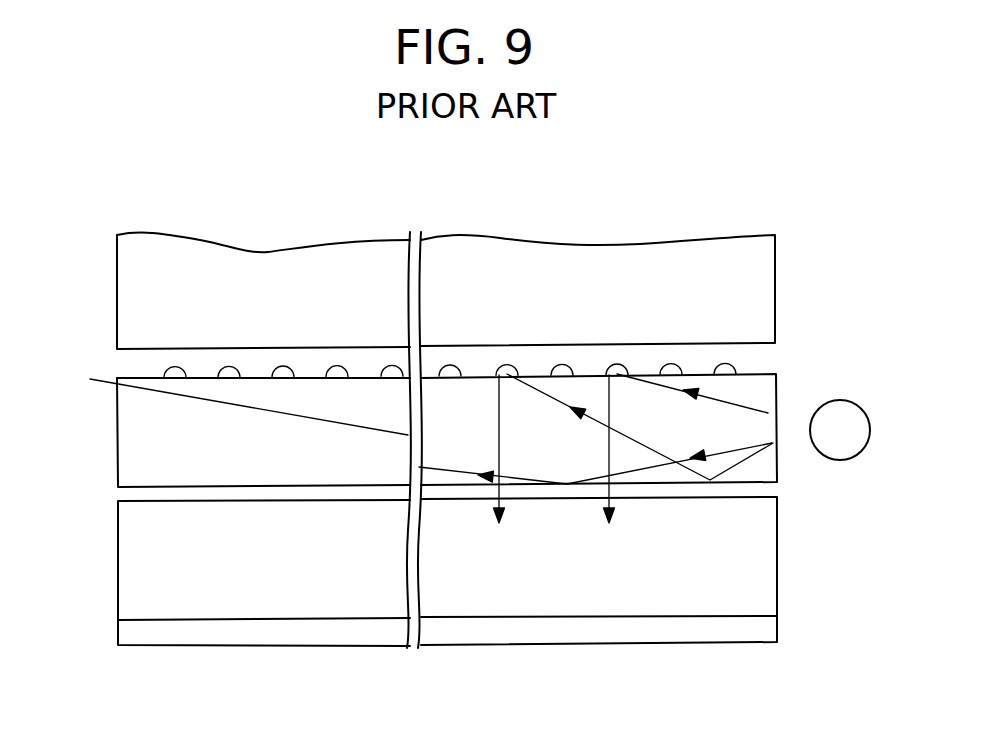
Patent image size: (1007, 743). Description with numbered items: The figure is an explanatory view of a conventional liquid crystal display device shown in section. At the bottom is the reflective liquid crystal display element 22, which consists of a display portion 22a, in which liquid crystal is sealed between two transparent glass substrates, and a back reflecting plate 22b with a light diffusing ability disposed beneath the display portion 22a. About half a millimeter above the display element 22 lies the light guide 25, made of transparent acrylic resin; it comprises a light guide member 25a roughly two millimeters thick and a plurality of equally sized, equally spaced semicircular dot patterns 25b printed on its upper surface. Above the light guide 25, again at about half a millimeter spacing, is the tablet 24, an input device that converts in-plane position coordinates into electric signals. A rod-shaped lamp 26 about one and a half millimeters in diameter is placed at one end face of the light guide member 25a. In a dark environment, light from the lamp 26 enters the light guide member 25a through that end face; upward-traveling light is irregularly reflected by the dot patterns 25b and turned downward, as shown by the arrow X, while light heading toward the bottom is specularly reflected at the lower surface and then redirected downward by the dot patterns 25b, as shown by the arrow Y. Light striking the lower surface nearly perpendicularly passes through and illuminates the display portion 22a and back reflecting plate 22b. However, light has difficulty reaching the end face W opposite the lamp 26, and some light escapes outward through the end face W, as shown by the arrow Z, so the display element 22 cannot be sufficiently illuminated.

The reflective liquid crystal display element 22 is at (469, 605).
The display portion 22a is at (138, 566).
The back reflecting plate 22b is at (170, 635).
The tablet 24 is at (790, 276).
The light guide 25 is at (456, 410).
The light guide member 25a is at (142, 455).
The semicircular dot patterns 25b is at (173, 367).
The lamp 26 is at (842, 402).
The end face W is at (104, 410).
The arrow X is at (609, 542).
The arrow Y is at (498, 542).
The arrow Z is at (797, 406).